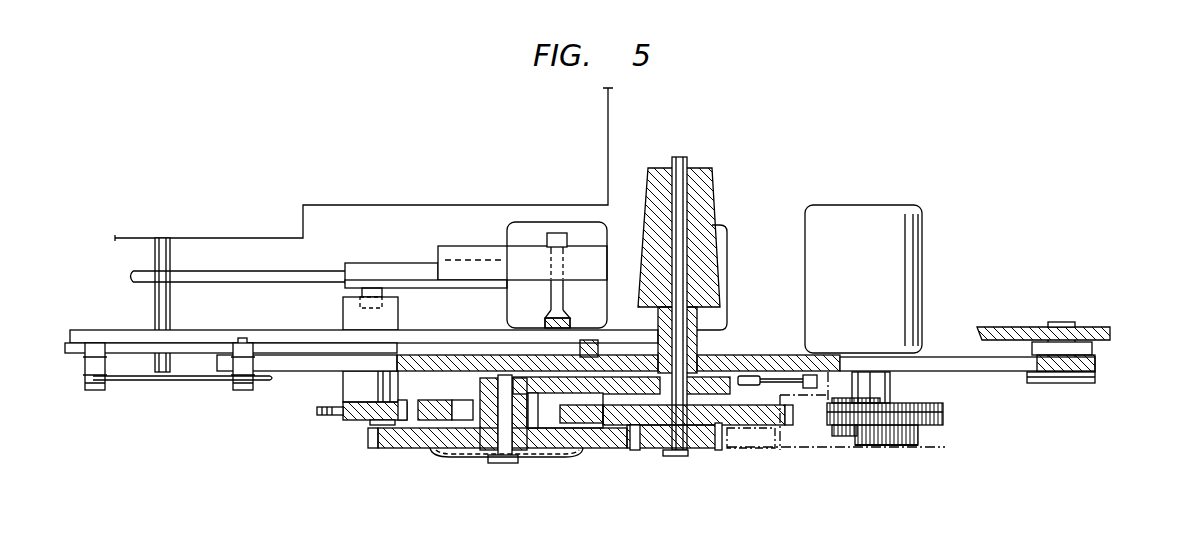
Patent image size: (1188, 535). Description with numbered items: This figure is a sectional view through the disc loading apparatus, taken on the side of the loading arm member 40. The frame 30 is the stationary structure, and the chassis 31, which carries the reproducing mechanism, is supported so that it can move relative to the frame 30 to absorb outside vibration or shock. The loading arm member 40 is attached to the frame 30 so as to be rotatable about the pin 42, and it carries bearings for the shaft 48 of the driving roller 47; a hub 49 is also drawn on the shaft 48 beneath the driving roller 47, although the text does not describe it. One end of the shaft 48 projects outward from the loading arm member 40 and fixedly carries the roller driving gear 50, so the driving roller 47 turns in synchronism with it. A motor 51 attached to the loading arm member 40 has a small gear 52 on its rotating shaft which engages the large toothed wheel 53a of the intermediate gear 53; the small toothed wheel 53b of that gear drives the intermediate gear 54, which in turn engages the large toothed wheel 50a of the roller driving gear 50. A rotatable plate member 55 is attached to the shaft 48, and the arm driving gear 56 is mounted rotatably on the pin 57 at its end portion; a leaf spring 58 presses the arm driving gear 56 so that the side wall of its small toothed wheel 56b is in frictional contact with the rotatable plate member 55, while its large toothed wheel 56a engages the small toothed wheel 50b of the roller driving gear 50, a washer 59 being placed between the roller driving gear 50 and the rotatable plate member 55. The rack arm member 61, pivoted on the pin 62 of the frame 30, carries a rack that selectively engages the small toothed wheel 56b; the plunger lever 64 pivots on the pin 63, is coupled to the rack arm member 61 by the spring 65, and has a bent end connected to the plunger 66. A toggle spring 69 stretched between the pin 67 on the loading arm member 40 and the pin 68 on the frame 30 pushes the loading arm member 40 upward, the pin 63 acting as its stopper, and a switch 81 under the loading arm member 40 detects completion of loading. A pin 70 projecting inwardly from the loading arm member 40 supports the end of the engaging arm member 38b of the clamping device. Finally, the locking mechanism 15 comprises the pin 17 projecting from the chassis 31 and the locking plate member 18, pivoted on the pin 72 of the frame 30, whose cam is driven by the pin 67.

The locking mechanism 15 is at (192, 397).
The pin 17 is at (172, 250).
The locking plate member 18 is at (128, 338).
The frame 30 is at (1012, 328).
The chassis 31 is at (364, 206).
The engaging arm member 38b is at (455, 248).
The loading arm member 40 is at (1000, 372).
The pin 42 is at (1096, 352).
The driving roller 47 is at (714, 190).
The shaft 48 is at (680, 458).
The hub 49 is at (700, 322).
The roller driving gear 50 is at (698, 454).
The large toothed wheel 50a is at (768, 448).
The small toothed wheel 50b is at (712, 432).
The motor 51 is at (908, 292).
The small gear 52 is at (833, 430).
The intermediate gear 53 is at (938, 401).
The large toothed wheel 53a is at (935, 428).
The small toothed wheel 53b is at (918, 447).
The intermediate gear 54 is at (816, 450).
The rotatable plate member 55 is at (625, 377).
The arm driving gear 56 is at (497, 441).
The large toothed wheel 56a is at (585, 448).
The small toothed wheel 56b is at (522, 425).
The pin 57 is at (500, 464).
The leaf spring 58 is at (456, 459).
The washer 59 is at (712, 356).
The rack arm member 61 is at (437, 400).
The pin 62 is at (588, 340).
The pin 63 is at (360, 382).
The plunger lever 64 is at (350, 421).
The spring 65 is at (322, 416).
The plunger 66 is at (532, 224).
The pin 67 is at (240, 390).
The pin 68 is at (92, 390).
The toggle spring 69 is at (160, 382).
The pin 70 is at (560, 232).
The pin 72 is at (234, 340).
The switch 81 is at (808, 376).